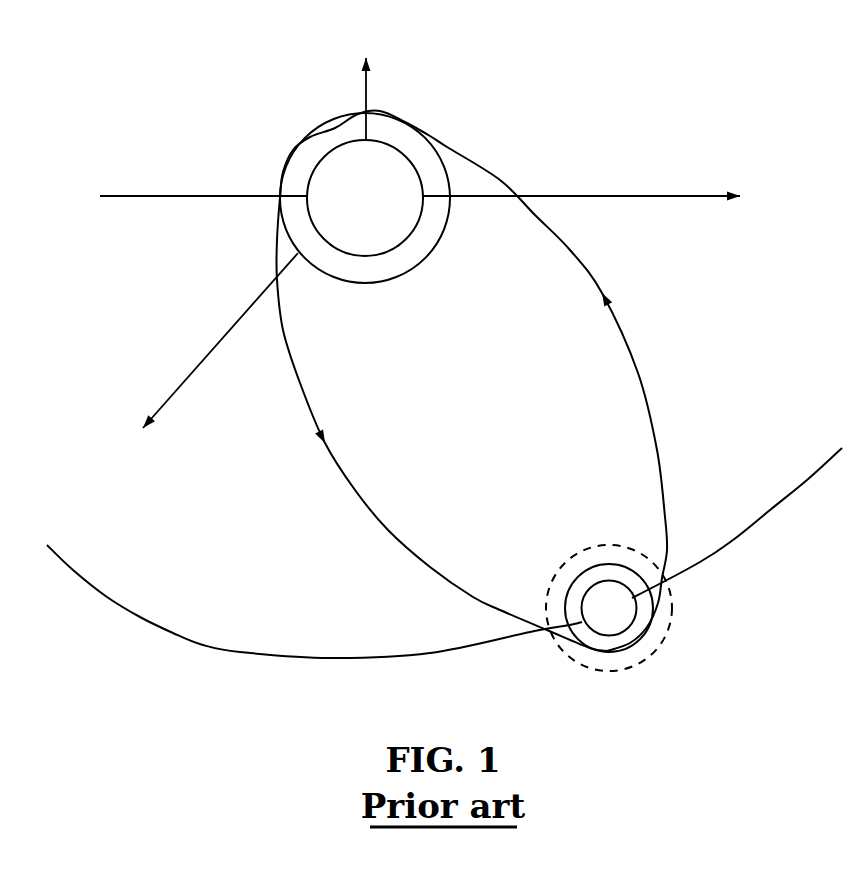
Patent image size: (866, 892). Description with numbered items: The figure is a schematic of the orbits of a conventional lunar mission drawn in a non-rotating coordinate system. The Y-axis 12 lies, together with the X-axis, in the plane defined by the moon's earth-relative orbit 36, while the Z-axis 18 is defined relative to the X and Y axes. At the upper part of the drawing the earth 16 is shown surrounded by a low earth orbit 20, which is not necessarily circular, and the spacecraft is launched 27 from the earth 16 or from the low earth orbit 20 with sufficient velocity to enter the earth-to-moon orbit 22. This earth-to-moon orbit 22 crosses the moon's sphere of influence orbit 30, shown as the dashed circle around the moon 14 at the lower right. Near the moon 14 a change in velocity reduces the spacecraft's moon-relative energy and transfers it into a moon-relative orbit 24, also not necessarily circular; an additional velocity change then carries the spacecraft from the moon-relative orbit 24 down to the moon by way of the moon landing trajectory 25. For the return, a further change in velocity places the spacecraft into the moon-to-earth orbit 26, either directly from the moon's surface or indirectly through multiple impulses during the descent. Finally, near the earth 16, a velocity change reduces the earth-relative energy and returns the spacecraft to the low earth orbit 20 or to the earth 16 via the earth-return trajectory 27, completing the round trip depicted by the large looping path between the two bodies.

The Y-axis 12 is at (192, 373).
The moon 14 is at (630, 627).
The earth 16 is at (365, 256).
The Z-axis 18 is at (366, 92).
The low earth orbit 20 is at (433, 253).
The earth-to-moon orbit 22 is at (388, 530).
The moon-relative orbit 24 is at (640, 568).
The moon landing trajectory 25 is at (577, 593).
The moon-to-earth orbit 26 is at (638, 373).
The earth-return trajectory 27 is at (335, 130).
The moon's sphere of influence orbit 30 is at (558, 663).
The moon's earth-relative orbit 36 is at (203, 645).